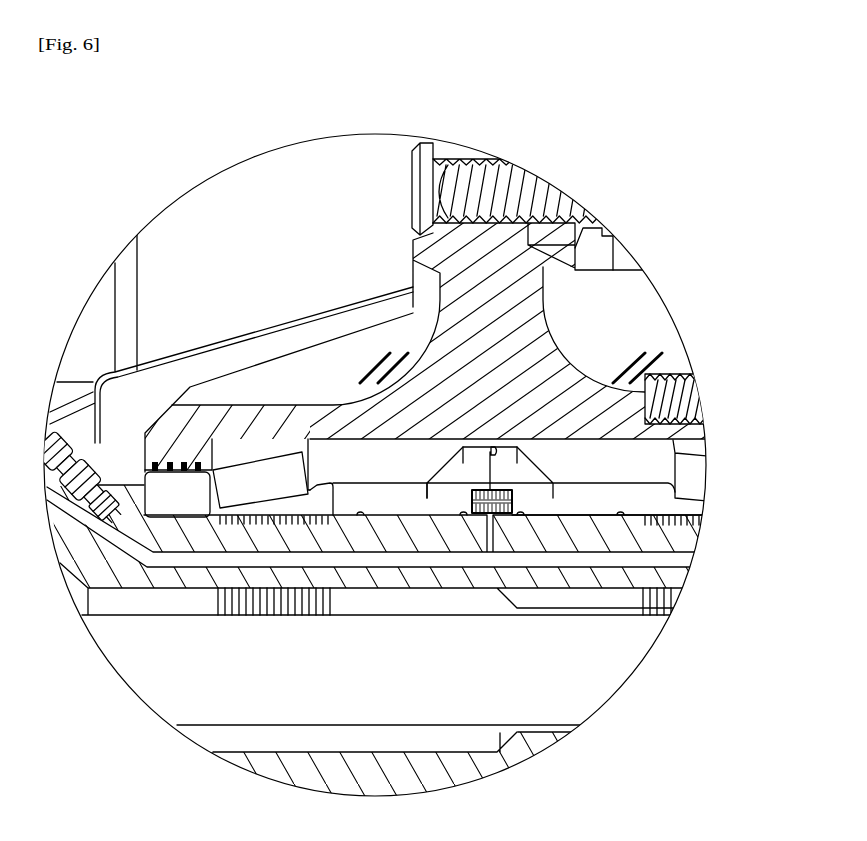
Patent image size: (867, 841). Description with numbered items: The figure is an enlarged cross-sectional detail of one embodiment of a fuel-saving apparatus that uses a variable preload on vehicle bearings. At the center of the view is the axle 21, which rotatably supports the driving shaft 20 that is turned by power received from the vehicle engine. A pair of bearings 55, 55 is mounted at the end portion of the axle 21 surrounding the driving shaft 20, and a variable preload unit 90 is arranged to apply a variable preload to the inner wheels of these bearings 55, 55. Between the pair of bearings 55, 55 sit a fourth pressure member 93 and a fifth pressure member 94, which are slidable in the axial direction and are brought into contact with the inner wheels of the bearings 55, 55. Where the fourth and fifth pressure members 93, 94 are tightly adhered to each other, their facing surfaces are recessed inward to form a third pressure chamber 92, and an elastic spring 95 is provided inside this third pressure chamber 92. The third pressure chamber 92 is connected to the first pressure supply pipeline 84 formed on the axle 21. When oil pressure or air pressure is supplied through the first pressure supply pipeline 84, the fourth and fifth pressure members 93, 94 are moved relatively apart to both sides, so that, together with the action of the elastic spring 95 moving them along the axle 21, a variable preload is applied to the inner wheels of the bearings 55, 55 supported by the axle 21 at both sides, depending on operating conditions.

The driving shaft 20 is at (585, 692).
The axle 21 is at (680, 535).
The bearing 55 is at (243, 427).
The first pressure supply pipeline 84 is at (542, 560).
The variable preload unit 90 is at (623, 462).
The third pressure chamber 92 is at (513, 495).
The fourth pressure member 93 is at (370, 488).
The fifth pressure member 94 is at (578, 498).
The elastic spring 95 is at (482, 489).